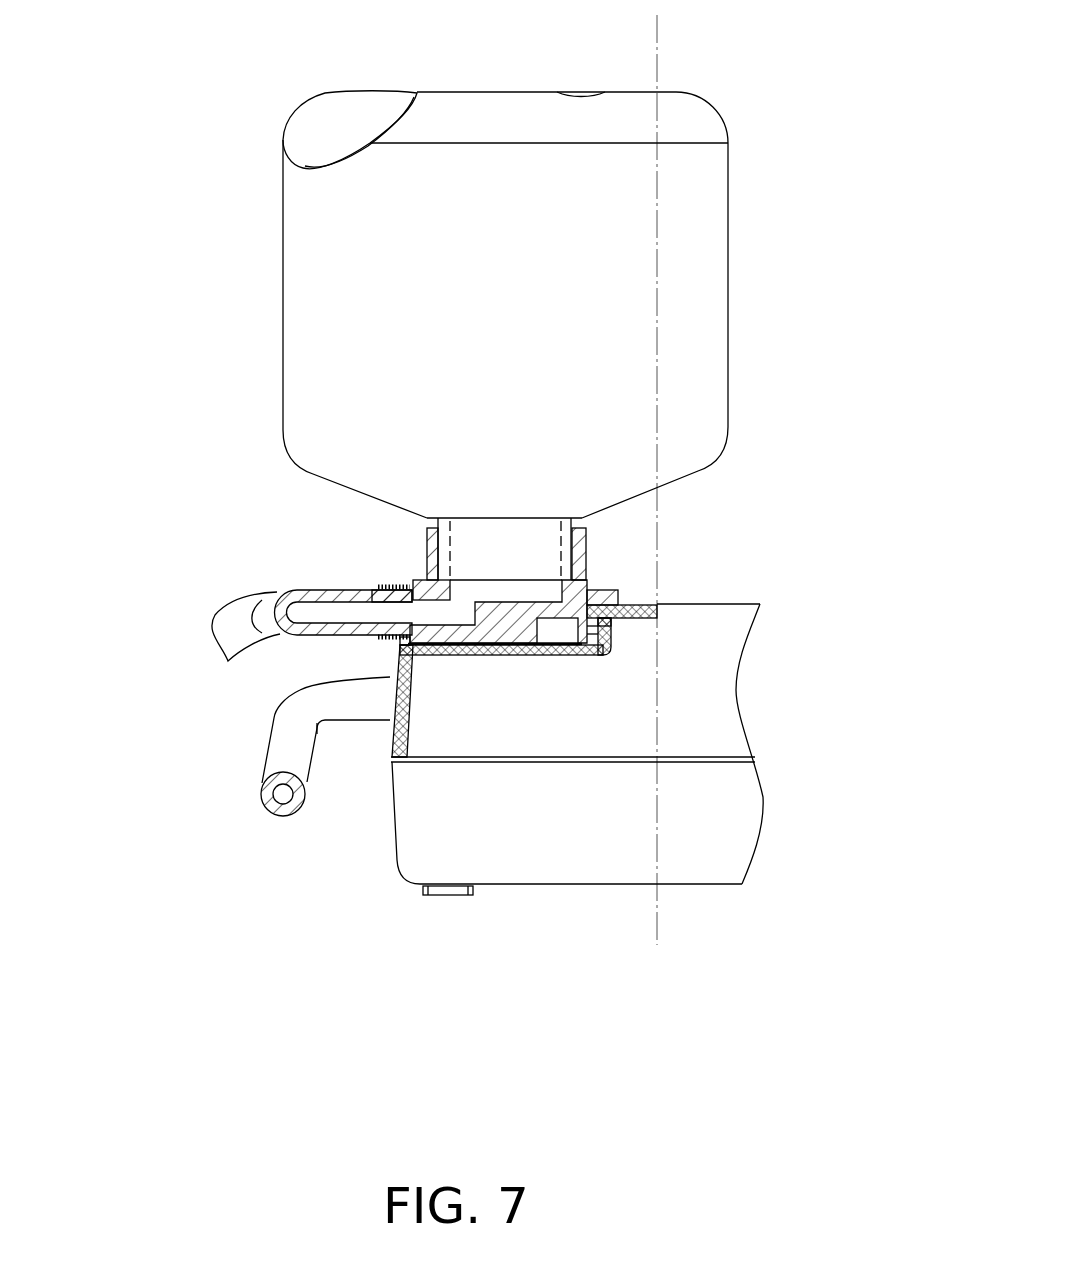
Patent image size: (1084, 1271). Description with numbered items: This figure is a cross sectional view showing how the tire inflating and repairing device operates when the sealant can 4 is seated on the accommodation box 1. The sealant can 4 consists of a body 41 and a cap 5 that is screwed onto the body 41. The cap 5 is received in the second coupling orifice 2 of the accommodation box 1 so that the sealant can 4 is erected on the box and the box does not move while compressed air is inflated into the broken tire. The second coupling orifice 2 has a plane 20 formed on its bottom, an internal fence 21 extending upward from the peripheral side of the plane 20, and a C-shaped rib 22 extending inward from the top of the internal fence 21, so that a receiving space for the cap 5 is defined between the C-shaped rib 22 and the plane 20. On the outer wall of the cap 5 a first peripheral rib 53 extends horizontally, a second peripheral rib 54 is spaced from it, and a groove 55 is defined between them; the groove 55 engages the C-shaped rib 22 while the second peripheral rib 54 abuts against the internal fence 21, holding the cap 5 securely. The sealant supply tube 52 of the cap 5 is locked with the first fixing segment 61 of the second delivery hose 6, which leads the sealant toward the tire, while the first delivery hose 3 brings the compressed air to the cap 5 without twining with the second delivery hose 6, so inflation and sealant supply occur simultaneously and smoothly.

The accommodation box 1 is at (430, 827).
The second coupling orifice 2 is at (543, 636).
The plane 20 is at (573, 640).
The internal fence 21 is at (585, 652).
The C-shaped rib 22 is at (620, 605).
The first delivery hose 3 is at (283, 743).
The sealant can 4 is at (505, 112).
The body 41 is at (710, 333).
The cap 5 is at (427, 552).
The sealant supply tube 52 is at (382, 585).
The first peripheral rib 53 is at (610, 600).
The second peripheral rib 54 is at (611, 630).
The groove 55 is at (613, 618).
The second delivery hose 6 is at (217, 650).
The first fixing segment 61 is at (378, 586).